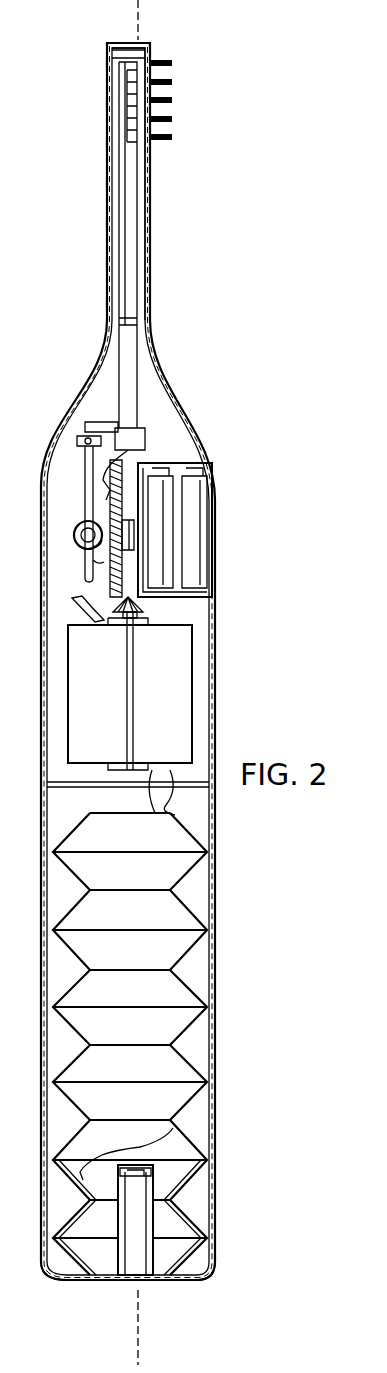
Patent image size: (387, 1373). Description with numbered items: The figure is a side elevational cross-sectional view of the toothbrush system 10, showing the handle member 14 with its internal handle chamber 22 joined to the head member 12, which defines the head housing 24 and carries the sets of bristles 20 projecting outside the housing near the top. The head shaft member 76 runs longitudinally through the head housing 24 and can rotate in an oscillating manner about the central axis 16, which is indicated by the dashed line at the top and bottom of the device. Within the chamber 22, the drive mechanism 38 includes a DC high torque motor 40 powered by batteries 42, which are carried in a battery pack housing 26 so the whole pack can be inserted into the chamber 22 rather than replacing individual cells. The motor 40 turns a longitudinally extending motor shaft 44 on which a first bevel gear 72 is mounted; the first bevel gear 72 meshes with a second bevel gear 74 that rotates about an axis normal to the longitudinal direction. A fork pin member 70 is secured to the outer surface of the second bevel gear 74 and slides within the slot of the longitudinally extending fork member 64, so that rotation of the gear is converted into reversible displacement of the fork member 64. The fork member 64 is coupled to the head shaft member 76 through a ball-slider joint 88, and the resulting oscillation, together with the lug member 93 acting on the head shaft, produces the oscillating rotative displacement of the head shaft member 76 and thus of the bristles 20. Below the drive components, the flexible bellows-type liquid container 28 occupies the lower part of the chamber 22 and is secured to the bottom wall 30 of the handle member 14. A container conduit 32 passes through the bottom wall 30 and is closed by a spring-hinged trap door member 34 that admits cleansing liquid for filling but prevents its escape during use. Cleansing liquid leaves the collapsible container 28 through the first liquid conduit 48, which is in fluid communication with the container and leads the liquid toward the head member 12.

The toothbrush system 10 is at (77, 283).
The head member 12 is at (152, 273).
The handle member 14 is at (222, 932).
The central axis 16 is at (142, 14).
The bristles 20 is at (163, 53).
The internal handle chamber 22 is at (207, 978).
The head housing 24 is at (147, 287).
The battery pack housing 26 is at (178, 462).
The liquid container 28 is at (198, 1022).
The bottom wall 30 is at (197, 1283).
The container conduit 32 is at (146, 1260).
The trap door member 34 is at (136, 1165).
The drive mechanism 38 is at (178, 607).
The motor 40 is at (180, 672).
The batteries 42 is at (205, 520).
The motor shaft 44 is at (137, 728).
The first liquid conduit 48 is at (178, 816).
The fork member 64 is at (83, 497).
The fork pin member 70 is at (97, 567).
The first bevel gear 72 is at (112, 625).
The second bevel gear 74 is at (130, 466).
The head shaft member 76 is at (137, 408).
The ball-slider joint 88 is at (88, 442).
The lug member 93 is at (92, 432).